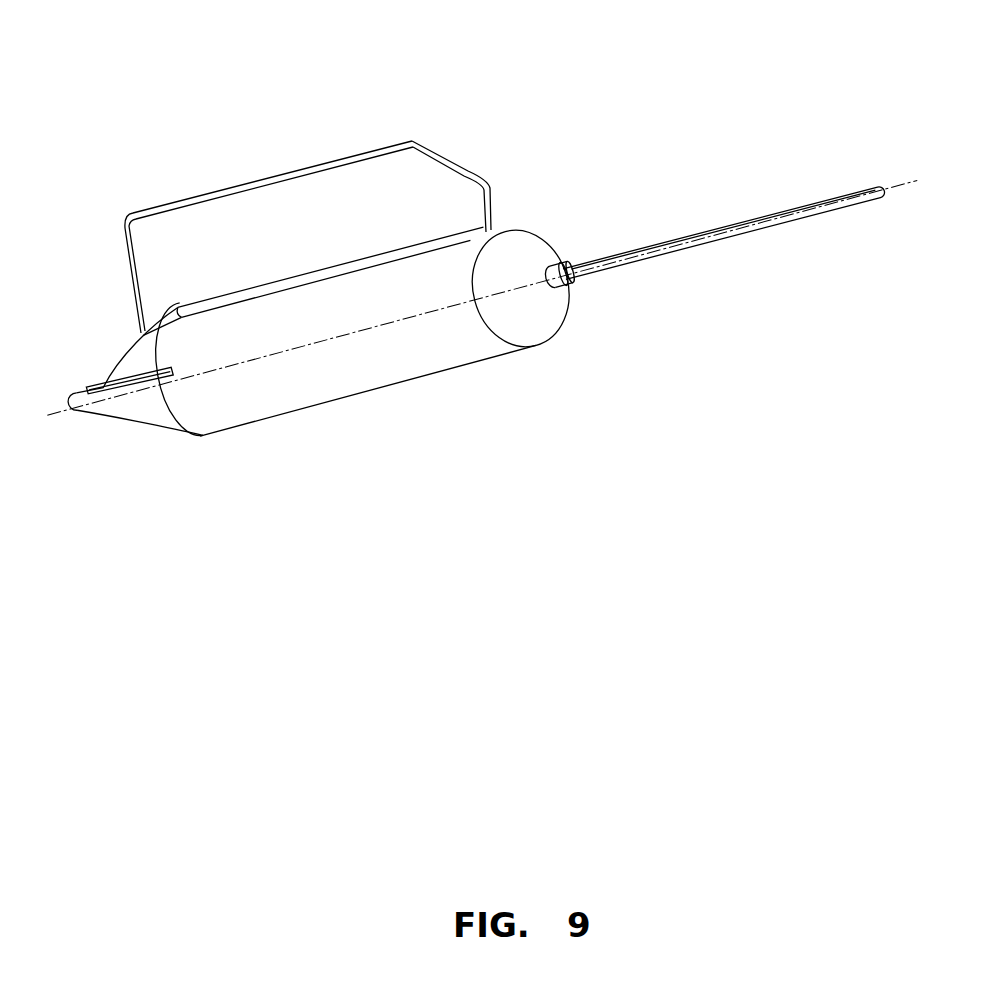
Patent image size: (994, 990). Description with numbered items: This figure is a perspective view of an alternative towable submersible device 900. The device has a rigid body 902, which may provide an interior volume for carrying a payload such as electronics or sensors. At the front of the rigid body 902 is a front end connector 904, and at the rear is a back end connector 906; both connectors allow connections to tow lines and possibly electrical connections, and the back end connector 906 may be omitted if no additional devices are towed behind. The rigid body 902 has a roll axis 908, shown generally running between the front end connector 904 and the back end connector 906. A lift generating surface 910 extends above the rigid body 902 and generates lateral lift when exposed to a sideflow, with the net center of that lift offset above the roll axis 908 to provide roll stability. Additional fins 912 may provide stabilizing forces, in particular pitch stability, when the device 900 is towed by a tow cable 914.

The towable submersible device 900 is at (473, 264).
The rigid body 902 is at (385, 358).
The front end connector 904 is at (550, 283).
The back end connector 906 is at (83, 407).
The roll axis 908 is at (245, 358).
The lift generating surface 910 is at (283, 193).
The fins 912 is at (128, 382).
The tow cable 914 is at (818, 205).